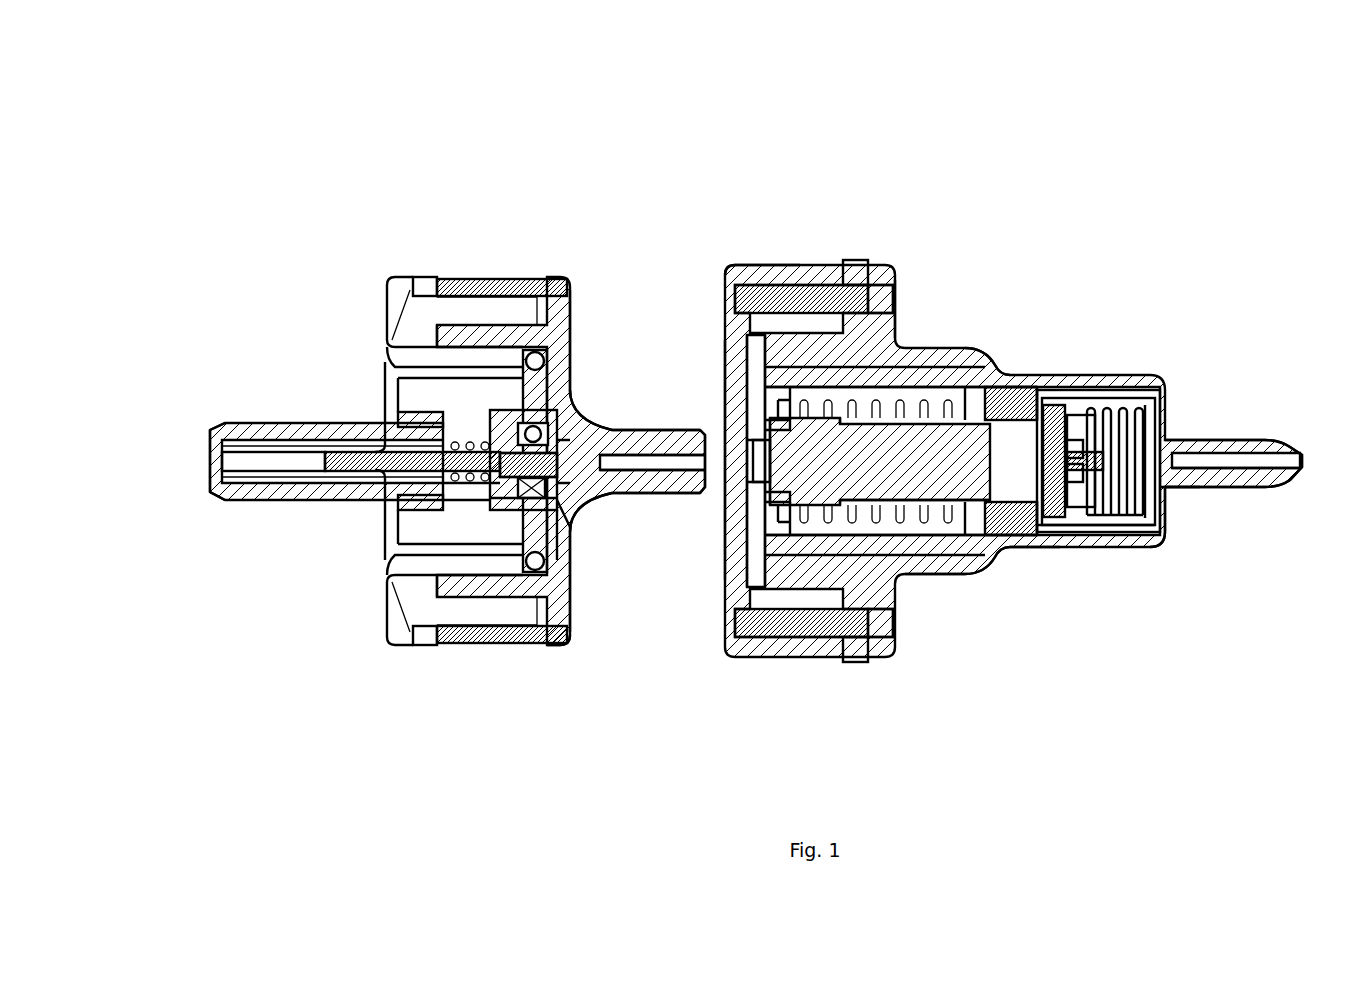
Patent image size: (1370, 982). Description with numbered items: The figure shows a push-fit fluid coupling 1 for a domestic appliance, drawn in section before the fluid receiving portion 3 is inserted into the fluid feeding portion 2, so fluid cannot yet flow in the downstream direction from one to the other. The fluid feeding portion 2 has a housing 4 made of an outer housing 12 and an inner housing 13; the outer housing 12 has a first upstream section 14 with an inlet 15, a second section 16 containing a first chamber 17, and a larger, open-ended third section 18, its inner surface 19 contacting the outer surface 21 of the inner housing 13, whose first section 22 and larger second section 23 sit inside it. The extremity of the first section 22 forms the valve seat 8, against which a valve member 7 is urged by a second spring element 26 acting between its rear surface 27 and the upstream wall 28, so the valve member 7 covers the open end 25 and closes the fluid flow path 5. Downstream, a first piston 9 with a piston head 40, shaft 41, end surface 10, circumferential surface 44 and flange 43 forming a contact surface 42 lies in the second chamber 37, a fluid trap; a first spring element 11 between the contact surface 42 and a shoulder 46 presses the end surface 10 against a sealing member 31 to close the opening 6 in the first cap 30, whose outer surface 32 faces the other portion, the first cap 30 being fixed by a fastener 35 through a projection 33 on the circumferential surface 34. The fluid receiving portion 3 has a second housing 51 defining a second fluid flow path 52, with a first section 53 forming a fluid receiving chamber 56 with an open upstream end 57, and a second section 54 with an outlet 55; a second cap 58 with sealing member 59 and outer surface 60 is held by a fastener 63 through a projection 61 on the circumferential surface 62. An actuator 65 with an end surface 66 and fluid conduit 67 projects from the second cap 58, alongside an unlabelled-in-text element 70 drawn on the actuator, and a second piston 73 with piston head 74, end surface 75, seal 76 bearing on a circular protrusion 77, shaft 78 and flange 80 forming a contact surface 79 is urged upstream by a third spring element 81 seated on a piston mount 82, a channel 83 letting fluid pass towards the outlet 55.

The push-fit fluid coupling 1 is at (1222, 162).
The fluid feeding portion 2 is at (1282, 260).
The fluid receiving portion 3 is at (308, 286).
The housing 4 is at (1170, 560).
The fluid flow path 5 is at (920, 420).
The opening 6 is at (745, 450).
The valve member 7 is at (1065, 495).
The valve seat 8 is at (1045, 510).
The first piston 9 is at (940, 525).
The end surface 10 is at (760, 470).
The first spring element 11 is at (920, 515).
The outer housing 12 is at (975, 555).
The inner housing 13 is at (1060, 405).
The first upstream section 14 is at (1245, 440).
The inlet 15 is at (1300, 450).
The second section 16 is at (1115, 520).
The first chamber 17 is at (1170, 495).
The third section 18 is at (980, 565).
The inner surface 19 is at (1000, 365).
The outer surface 21 is at (975, 385).
The first section 22 is at (1080, 395).
The second section 23 is at (950, 370).
The open end 25 is at (1000, 545).
The second spring element 26 is at (1165, 540).
The rear surface 27 is at (1100, 412).
The upstream wall 28 is at (1190, 500).
The first cap 30 is at (735, 580).
The sealing member 31 is at (755, 560).
The outer surface 32 is at (735, 330).
The projection 33 is at (853, 262).
The circumferential surface 34 is at (898, 340).
The fastener 35 is at (882, 262).
The second chamber 37 is at (875, 540).
The piston head 40 is at (770, 360).
The shaft 41 is at (1015, 405).
The contact surface 42 is at (820, 640).
The flange 43 is at (745, 560).
The circumferential surface 44 is at (770, 465).
The shoulder 46 is at (1010, 395).
The second housing 51 is at (420, 528).
The second fluid flow path 52 is at (485, 395).
The first section 53 is at (430, 642).
The second section 54 is at (330, 500).
The outlet 55 is at (215, 475).
The fluid receiving chamber 56 is at (432, 375).
The open upstream end 57 is at (520, 530).
The second cap 58 is at (565, 645).
The sealing member 59 is at (570, 575).
The outer surface 60 is at (570, 600).
The projection 61 is at (425, 278).
The circumferential surface 62 is at (500, 560).
The fastener 63 is at (390, 345).
The actuator 65 is at (618, 500).
The end surface 66 is at (700, 440).
The fluid conduit 67 is at (630, 470).
The output shaft 70 is at (615, 430).
The second piston 73 is at (515, 420).
The piston head 74 is at (548, 425).
The end surface 75 is at (560, 445).
The seal 76 is at (560, 400).
The circular protrusion 77 is at (565, 540).
The shaft 78 is at (360, 458).
The contact surface 79 is at (525, 500).
The flange 80 is at (575, 520).
The third spring element 81 is at (470, 485).
The piston mount 82 is at (410, 485).
The channel 83 is at (392, 440).